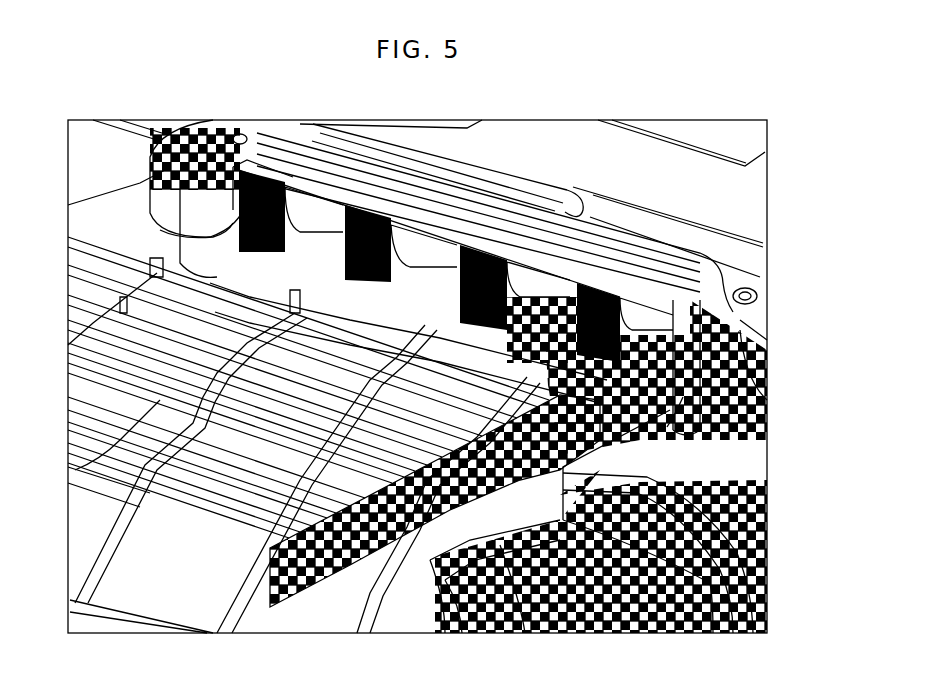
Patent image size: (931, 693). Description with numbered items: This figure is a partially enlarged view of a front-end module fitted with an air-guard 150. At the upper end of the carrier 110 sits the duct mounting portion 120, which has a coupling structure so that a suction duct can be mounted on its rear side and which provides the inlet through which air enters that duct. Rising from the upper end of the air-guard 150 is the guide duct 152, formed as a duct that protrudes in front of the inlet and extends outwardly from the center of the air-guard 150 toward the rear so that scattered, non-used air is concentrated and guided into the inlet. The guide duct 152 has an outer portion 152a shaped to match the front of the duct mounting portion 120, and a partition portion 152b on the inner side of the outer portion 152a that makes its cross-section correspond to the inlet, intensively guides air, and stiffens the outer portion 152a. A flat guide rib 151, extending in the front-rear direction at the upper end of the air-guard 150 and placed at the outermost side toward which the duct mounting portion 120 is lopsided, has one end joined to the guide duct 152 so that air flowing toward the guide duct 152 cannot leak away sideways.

The carrier 110 is at (743, 192).
The duct mounting portion 120 is at (447, 245).
The air-guard 150 is at (720, 466).
The guide rib 151 is at (247, 573).
The guide duct 152 is at (258, 195).
The outer portion 152a is at (330, 300).
The partition portion 152b is at (400, 290).